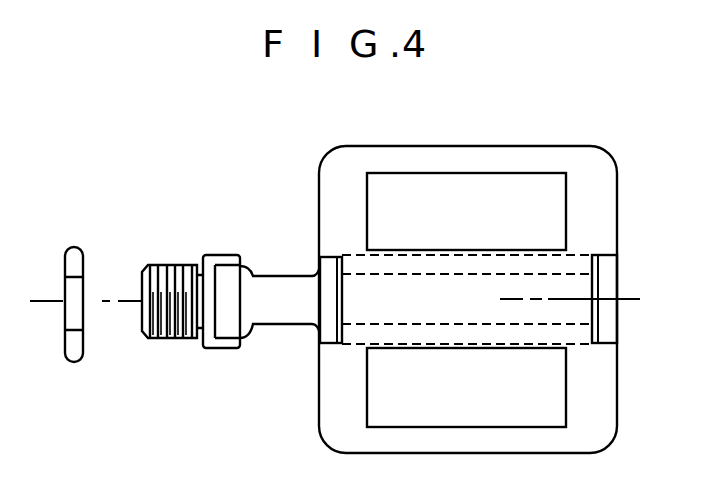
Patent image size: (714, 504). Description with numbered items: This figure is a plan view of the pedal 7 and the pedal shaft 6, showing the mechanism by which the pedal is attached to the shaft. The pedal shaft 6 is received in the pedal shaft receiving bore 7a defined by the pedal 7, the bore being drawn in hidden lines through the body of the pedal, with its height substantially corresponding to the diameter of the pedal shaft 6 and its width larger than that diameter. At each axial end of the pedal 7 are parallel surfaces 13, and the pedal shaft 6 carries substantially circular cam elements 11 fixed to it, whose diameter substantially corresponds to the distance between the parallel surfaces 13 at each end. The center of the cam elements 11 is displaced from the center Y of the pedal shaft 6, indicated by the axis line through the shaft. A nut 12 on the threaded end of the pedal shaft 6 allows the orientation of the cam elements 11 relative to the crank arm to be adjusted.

The pedal shaft 6 is at (255, 276).
The pedal 7 is at (605, 176).
The pedal shaft receiving bore 7a is at (400, 255).
The cam elements 11 is at (318, 278).
The nut 12 is at (73, 250).
The parallel surfaces 13 is at (335, 331).
The center of the pedal shaft Y is at (346, 297).